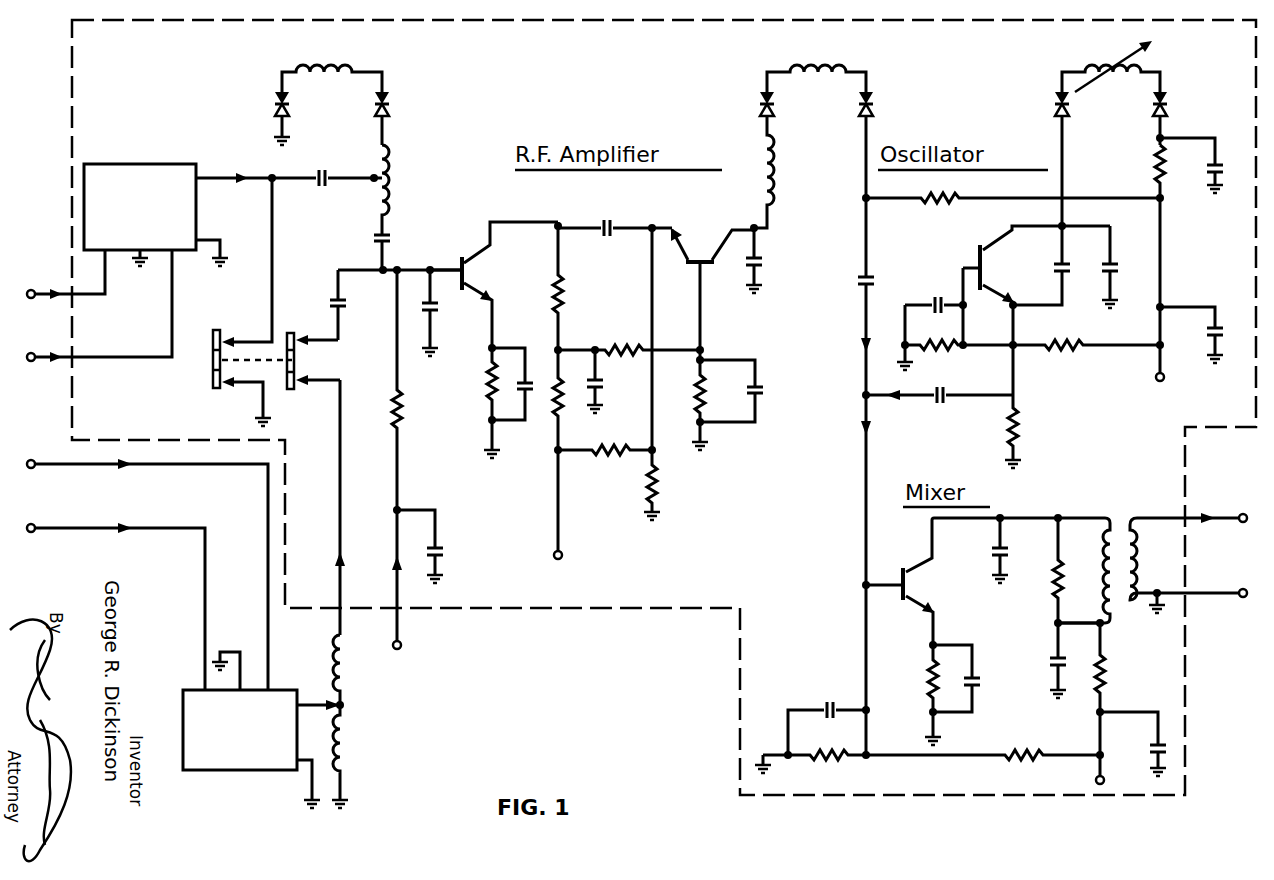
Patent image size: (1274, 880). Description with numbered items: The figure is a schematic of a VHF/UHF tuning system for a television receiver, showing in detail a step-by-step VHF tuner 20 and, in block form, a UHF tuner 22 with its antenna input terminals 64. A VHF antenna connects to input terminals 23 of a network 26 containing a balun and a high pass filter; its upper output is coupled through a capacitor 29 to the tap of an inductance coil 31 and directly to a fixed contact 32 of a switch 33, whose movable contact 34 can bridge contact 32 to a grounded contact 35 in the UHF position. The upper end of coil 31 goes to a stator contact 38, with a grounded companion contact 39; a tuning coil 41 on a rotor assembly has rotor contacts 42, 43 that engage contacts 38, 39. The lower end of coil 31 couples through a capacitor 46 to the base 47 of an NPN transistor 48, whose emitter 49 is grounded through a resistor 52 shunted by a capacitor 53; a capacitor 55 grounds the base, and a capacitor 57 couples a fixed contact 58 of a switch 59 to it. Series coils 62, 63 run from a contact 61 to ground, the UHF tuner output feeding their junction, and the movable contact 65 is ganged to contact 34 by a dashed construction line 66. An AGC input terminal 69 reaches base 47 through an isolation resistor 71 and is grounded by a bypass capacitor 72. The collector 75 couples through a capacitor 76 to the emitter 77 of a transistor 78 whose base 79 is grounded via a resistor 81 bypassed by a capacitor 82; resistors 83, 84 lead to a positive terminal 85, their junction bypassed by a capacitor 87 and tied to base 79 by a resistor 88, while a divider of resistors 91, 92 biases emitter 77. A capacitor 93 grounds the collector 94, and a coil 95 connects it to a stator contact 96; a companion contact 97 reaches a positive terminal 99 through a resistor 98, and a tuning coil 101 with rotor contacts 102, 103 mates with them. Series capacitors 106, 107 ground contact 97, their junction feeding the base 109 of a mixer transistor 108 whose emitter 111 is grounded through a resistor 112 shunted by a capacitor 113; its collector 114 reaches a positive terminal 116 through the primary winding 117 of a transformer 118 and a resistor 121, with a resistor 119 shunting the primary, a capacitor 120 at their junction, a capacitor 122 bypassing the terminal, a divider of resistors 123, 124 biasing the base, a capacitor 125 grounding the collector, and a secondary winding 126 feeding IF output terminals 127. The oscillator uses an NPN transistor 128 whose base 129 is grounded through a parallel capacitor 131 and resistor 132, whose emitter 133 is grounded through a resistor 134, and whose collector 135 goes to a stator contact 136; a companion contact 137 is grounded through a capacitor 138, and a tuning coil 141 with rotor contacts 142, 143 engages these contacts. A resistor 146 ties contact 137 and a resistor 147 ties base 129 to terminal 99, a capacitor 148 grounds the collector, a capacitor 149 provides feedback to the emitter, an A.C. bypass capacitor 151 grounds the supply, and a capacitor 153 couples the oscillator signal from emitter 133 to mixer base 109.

The VHF tuner 20 is at (1100, 798).
The UHF tuner 22 is at (237, 772).
The input terminals 23 is at (34, 290).
The network 26 is at (118, 163).
The capacitor 29 is at (318, 170).
The inductance coil 31 is at (390, 175).
The fixed contact 32 is at (236, 342).
The switch 33 is at (230, 323).
The movable contact 34 is at (213, 370).
The fixed contact 35 is at (256, 386).
The stationary contact 38 is at (388, 110).
The stationary contact 39 is at (276, 108).
The inductance coil 41 is at (318, 70).
The rotor contact 42 is at (386, 97).
The rotor contact 43 is at (278, 97).
The capacitor 46 is at (380, 242).
The base 47 is at (459, 268).
The transistor 48 is at (485, 281).
The emitter 49 is at (490, 302).
The resistor 52 is at (490, 388).
The capacitor 53 is at (527, 380).
The capacitor 55 is at (434, 312).
The capacitor 57 is at (345, 305).
The fixed contact 58 is at (318, 344).
The switch 59 is at (320, 323).
The fixed contact 61 is at (322, 388).
The coil 62 is at (346, 660).
The coil 63 is at (352, 748).
The input terminals 64 is at (33, 462).
The movable contact 65 is at (298, 408).
The dashed construction line 66 is at (276, 372).
The AGC input terminal 69 is at (397, 650).
The isolation resistor 71 is at (400, 400).
The bypass capacitor 72 is at (442, 548).
The collector 75 is at (493, 255).
The capacitor 76 is at (610, 220).
The emitter 77 is at (683, 248).
The transistor 78 is at (704, 274).
The base 79 is at (698, 268).
The resistor 81 is at (705, 388).
The capacitor 82 is at (762, 388).
The resistor 83 is at (562, 295).
The resistor 84 is at (560, 404).
The positive terminal 85 is at (558, 560).
The capacitor 87 is at (600, 387).
The resistor 88 is at (622, 348).
The resistor 91 is at (612, 455).
The resistor 92 is at (658, 485).
The capacitor 93 is at (762, 265).
The collector 94 is at (714, 266).
The inductance coil 95 is at (774, 178).
The fixed contact 96 is at (760, 108).
The fixed contact 97 is at (876, 108).
The resistor 98 is at (959, 198).
The positive terminal 99 is at (1156, 378).
The inductance coil 101 is at (828, 68).
The rotor contact 102 is at (762, 98).
The rotor contact 103 is at (874, 98).
The capacitor 106 is at (864, 272).
The capacitor 107 is at (828, 705).
The transistor 108 is at (960, 581).
The base 109 is at (900, 600).
The emitter 111 is at (938, 612).
The resistor 112 is at (930, 678).
The capacitor 113 is at (978, 676).
The collector 114 is at (933, 560).
The positive terminal 116 is at (1096, 780).
The primary winding 117 is at (1084, 572).
The transformer 118 is at (1120, 553).
The resistor 119 is at (1055, 588).
The capacitor 120 is at (1056, 664).
The resistor 121 is at (1105, 672).
The capacitor 122 is at (1155, 745).
The resistor 123 is at (1022, 752).
The resistor 124 is at (830, 764).
The capacitor 125 is at (1004, 548).
The secondary winding 126 is at (1146, 565).
The output terminals 127 is at (1243, 514).
The transistor 128 is at (1016, 278).
The base 129 is at (976, 268).
The capacitor 131 is at (933, 300).
The resistor 132 is at (940, 352).
The emitter 133 is at (1011, 304).
The resistor 134 is at (1020, 425).
The collector 135 is at (1003, 256).
The fixed contact 136 is at (1056, 108).
The fixed contact 137 is at (1170, 108).
The capacitor 138 is at (1210, 186).
The inductance coil 141 is at (1106, 65).
The rotor contact 142 is at (1057, 97).
The rotor contact 143 is at (1168, 98).
The resistor 146 is at (1158, 158).
The resistor 147 is at (1064, 350).
The capacitor 148 is at (1112, 263).
The capacitor 149 is at (1060, 274).
The A.C. bypass capacitor 151 is at (1218, 322).
The capacitor 153 is at (934, 403).